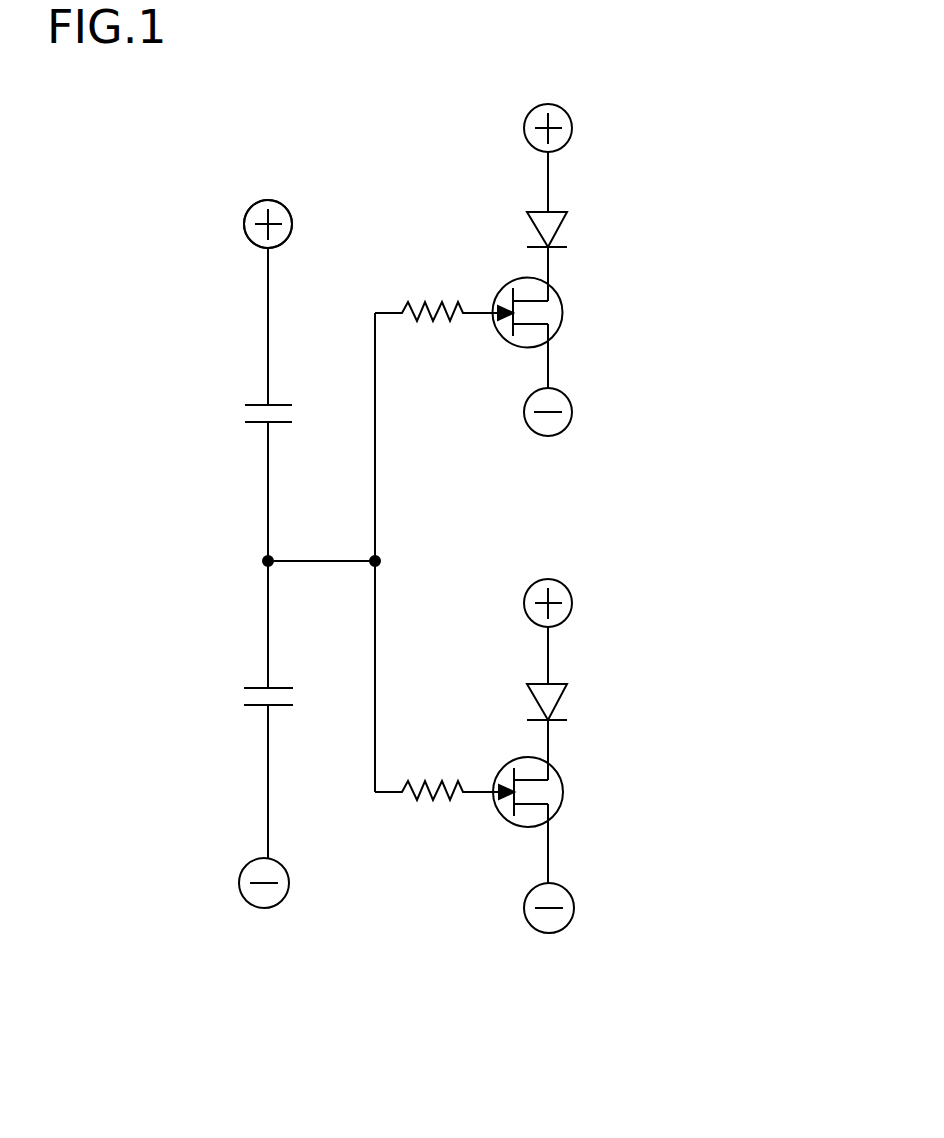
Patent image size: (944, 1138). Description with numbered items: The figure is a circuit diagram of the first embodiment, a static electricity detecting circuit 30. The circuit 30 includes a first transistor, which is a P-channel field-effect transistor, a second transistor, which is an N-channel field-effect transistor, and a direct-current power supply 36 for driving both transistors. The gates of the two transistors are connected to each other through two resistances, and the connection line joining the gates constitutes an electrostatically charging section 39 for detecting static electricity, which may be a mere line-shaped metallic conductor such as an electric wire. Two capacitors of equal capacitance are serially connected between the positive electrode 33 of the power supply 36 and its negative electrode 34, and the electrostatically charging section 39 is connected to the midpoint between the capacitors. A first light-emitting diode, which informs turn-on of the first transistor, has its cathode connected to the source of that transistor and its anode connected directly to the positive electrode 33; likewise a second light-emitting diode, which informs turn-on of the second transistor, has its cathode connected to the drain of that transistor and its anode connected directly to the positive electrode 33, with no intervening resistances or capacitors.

The static electricity detecting circuit 30 is at (800, 290).
The positive electrode 33 is at (435, 365).
The negative electrode 34 is at (433, 660).
The direct-current power supply 36 is at (288, 209).
The electrostatically charging section 39 is at (369, 547).